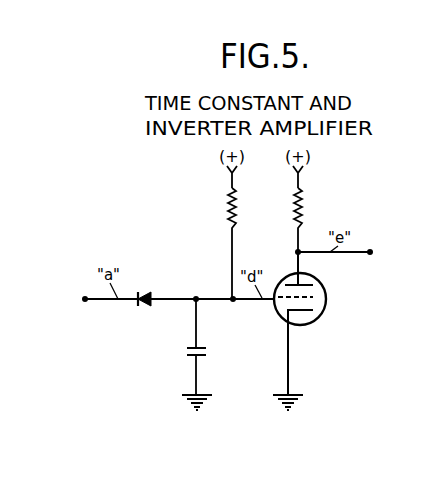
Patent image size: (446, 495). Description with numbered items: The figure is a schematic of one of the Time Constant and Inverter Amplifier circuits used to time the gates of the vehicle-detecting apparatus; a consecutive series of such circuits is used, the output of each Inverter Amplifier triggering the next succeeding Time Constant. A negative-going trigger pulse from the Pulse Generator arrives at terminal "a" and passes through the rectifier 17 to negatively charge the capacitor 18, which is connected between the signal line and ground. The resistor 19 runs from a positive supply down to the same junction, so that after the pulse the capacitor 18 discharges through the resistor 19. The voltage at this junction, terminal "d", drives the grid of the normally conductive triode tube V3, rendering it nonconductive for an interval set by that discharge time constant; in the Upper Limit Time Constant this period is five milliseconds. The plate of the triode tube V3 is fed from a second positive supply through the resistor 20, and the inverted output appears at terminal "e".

The rectifier 17 is at (149, 295).
The capacitor 18 is at (206, 350).
The resistor 19 is at (236, 215).
The plate load resistor 20 is at (302, 215).
The triode tube V3 is at (325, 290).